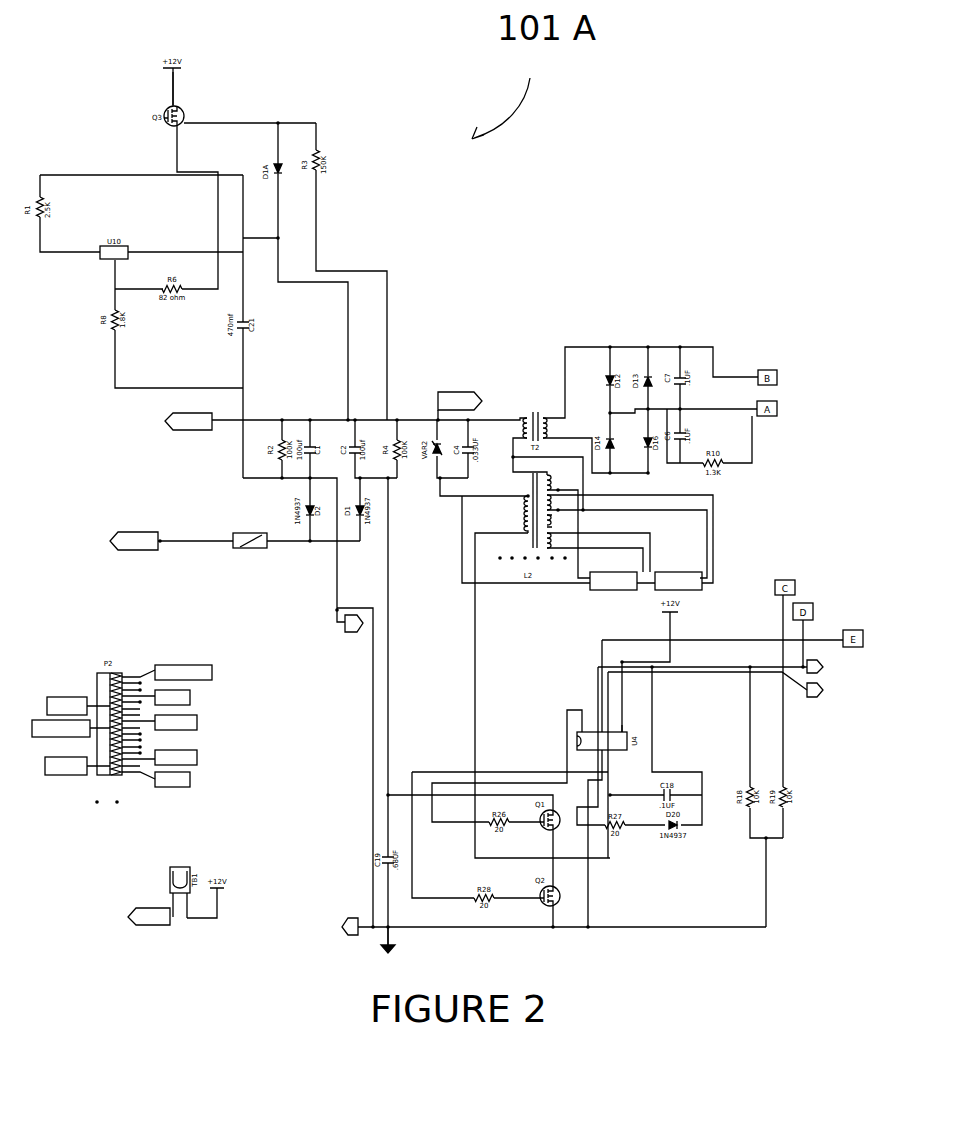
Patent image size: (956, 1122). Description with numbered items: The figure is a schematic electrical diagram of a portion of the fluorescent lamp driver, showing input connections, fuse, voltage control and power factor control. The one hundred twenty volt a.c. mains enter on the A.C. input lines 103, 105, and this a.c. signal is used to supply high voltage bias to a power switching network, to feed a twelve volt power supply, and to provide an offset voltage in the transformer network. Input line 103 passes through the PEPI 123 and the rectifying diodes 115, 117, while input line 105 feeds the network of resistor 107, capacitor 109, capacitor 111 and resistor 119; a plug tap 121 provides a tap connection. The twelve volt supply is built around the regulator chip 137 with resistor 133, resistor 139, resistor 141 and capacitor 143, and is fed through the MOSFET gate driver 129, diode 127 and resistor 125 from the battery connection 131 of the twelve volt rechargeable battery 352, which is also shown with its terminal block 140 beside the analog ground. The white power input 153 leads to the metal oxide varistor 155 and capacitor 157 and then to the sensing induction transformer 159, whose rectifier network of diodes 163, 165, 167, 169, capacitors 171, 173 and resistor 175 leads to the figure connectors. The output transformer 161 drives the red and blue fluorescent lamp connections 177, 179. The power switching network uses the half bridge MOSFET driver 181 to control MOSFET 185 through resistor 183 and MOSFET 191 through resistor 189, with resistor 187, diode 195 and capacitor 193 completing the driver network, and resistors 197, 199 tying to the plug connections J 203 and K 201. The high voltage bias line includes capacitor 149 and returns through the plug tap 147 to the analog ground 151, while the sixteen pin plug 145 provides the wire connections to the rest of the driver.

The 12 Volt rechargeable battery 352 is at (233, 903).
The battery connection 131 is at (176, 82).
The MOSFET gate driver 129 is at (186, 111).
The diode 127 is at (281, 158).
The resistor 125 is at (322, 160).
The regulator chip 137 is at (124, 240).
The resistor 133 is at (38, 243).
The resistor 139 is at (174, 295).
The resistor 141 is at (105, 306).
The capacitor 143 is at (258, 323).
The A.C. input line 105 is at (165, 420).
The resistor 107 is at (270, 462).
The capacitor 109 is at (315, 438).
The capacitor 111 is at (380, 423).
The resistor 119 is at (403, 430).
The power input 153 is at (465, 390).
The capacitor 157 is at (475, 440).
The metal oxide varistor 155 is at (430, 462).
The induction transformer 159 is at (535, 410).
The output transformer 161 is at (527, 487).
The diode 163 is at (607, 377).
The diode 165 is at (647, 373).
The capacitor 171 is at (687, 370).
The diode 167 is at (607, 437).
The diode 169 is at (647, 452).
The capacitor 173 is at (700, 437).
The resistor 175 is at (733, 470).
The fluorescent lamp connection 177 is at (588, 587).
The fluorescent lamp connection 179 is at (683, 562).
The half bridge MOSFET driver 181 is at (577, 740).
The MOSFET 185 is at (540, 812).
The resistor 183 is at (490, 830).
The MOSFET 191 is at (558, 888).
The resistor 189 is at (492, 910).
The resistor 187 is at (623, 828).
The diode 195 is at (677, 840).
The capacitor 193 is at (675, 793).
The resistor 197 is at (747, 783).
The resistor 199 is at (777, 812).
The plug connection 203 is at (823, 667).
The plug connection 201 is at (823, 690).
The A.C. input line 103 is at (127, 532).
The PEPI 123 is at (243, 532).
The diode 115 is at (303, 528).
The diode 117 is at (358, 528).
The plug tap 121 is at (345, 627).
The plug 145 is at (123, 663).
The terminal block TB1 140 is at (192, 867).
The plug tap 147 is at (343, 918).
The capacitor 149 is at (382, 857).
The ground analog 151 is at (382, 947).